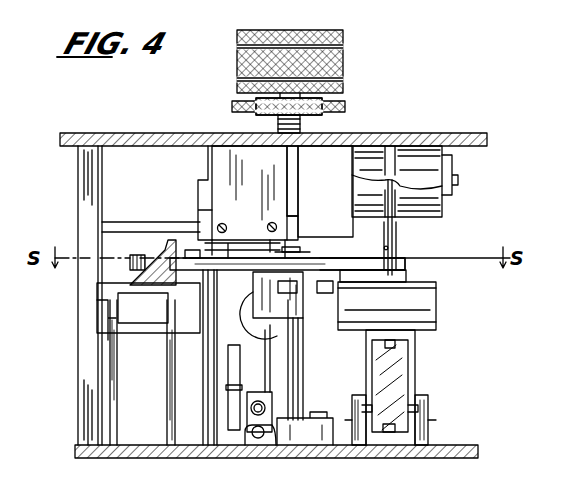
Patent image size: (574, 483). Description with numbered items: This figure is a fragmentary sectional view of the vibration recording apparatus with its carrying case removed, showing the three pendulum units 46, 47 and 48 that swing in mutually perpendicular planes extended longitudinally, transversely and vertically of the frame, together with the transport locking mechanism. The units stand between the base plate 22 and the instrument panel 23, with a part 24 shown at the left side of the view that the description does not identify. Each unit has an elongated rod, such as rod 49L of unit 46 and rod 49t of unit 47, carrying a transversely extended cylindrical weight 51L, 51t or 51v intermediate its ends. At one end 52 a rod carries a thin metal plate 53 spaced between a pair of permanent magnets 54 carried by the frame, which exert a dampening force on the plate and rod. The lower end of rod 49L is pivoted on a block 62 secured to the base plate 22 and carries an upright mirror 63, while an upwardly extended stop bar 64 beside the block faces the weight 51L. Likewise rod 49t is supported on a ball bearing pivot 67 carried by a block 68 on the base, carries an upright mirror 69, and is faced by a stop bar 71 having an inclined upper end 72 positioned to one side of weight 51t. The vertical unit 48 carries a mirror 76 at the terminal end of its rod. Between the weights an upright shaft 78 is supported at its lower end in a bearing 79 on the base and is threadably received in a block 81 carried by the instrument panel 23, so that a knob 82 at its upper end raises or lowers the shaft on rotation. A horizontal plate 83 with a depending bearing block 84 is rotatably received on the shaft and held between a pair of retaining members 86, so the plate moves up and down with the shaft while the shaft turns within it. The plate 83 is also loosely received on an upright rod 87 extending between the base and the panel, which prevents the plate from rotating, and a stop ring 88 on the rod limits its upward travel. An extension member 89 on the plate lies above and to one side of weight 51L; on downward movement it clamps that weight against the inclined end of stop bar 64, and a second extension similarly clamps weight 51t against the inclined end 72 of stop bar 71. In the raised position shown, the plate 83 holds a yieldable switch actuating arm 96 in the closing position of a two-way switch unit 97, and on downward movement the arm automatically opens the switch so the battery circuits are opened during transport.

The base plate 22 is at (452, 444).
The instrument panel 23 is at (466, 134).
The side wall 24 is at (78, 362).
The pendulum unit 46 is at (465, 310).
The pendulum unit 47 is at (235, 291).
The pendulum unit 48 is at (182, 357).
The rod 49L is at (396, 269).
The rod 49t is at (294, 372).
The cylindrical weight 51v is at (98, 312).
The cylindrical weight 51L is at (438, 320).
The cylindrical weight 51t is at (233, 318).
The rod end 52 is at (400, 218).
The thin metal plate 53 is at (346, 195).
The permanent magnets 54 is at (384, 170).
The block 62 is at (356, 396).
The upright mirror 63 is at (398, 366).
The stop bar 64 is at (414, 345).
The ball bearing pivot 67 is at (272, 407).
The block 68 is at (270, 438).
The upright mirror 69 is at (230, 400).
The stop bar 71 is at (278, 390).
The inclined upper end 72 is at (258, 324).
The mirror 76 is at (156, 256).
The upright shaft 78 is at (302, 356).
The bearing 79 is at (310, 442).
The block 81 is at (302, 165).
The knob 82 is at (343, 62).
The horizontal plate 83 is at (322, 268).
The bearing block 84 is at (320, 298).
The retaining members 86 is at (300, 320).
The upright rod 87 is at (207, 422).
The stop ring 88 is at (190, 258).
The extension member 89 is at (410, 280).
The switch actuating arm 96 is at (224, 244).
The switch unit 97 is at (198, 216).